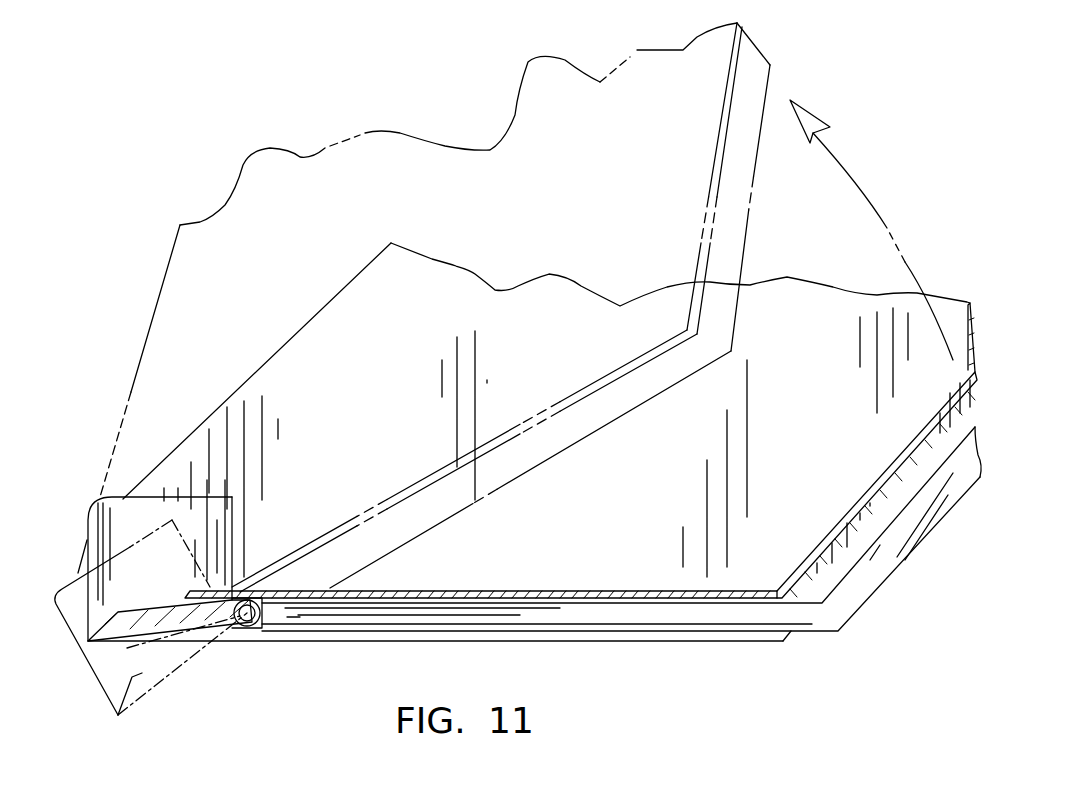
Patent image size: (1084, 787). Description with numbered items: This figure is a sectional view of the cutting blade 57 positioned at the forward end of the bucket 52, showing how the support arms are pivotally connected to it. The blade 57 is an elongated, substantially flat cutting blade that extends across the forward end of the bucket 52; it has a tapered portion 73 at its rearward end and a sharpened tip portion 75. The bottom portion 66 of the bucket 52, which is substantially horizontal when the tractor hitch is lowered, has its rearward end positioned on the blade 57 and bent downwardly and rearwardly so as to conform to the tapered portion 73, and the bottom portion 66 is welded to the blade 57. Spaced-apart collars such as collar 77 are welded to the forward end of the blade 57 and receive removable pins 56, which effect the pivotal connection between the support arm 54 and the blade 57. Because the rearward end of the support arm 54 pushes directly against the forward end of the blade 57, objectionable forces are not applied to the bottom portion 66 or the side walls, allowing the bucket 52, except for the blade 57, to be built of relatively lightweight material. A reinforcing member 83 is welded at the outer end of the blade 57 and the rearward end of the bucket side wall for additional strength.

The bucket 52 is at (787, 277).
The support arm 54 is at (870, 580).
The removable pin 56 is at (251, 620).
The cutting blade 57 is at (135, 643).
The bottom portion 66 is at (503, 588).
The tapered portion 73 is at (152, 607).
The sharpened tip portion 75 is at (88, 641).
The collar 77 is at (262, 600).
The reinforcing member 83 is at (203, 518).